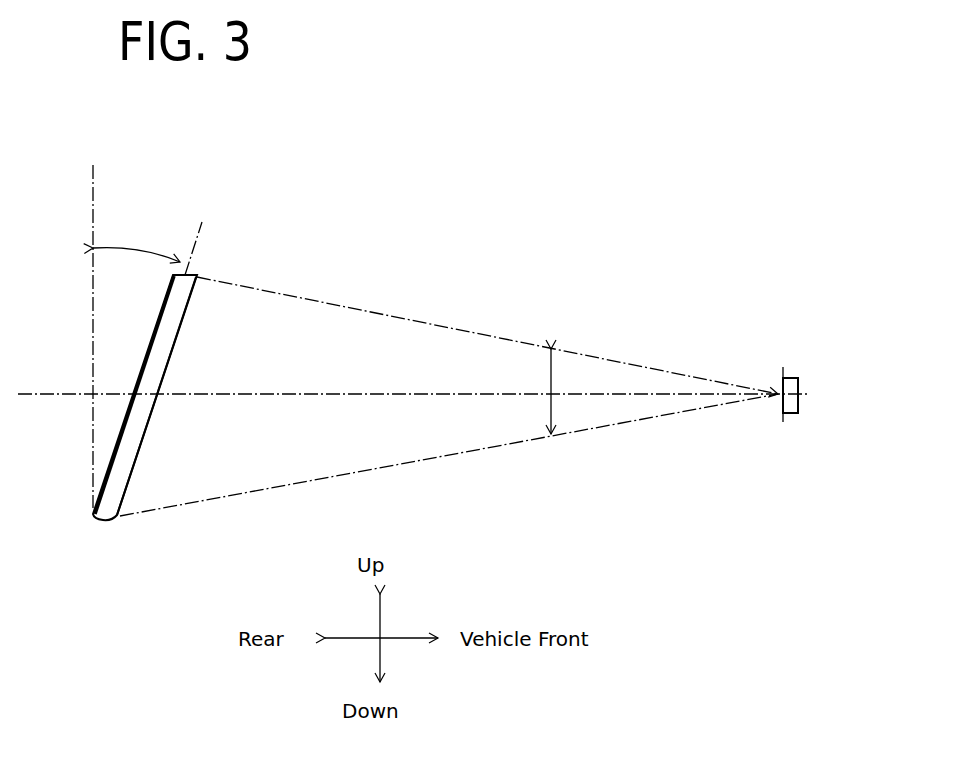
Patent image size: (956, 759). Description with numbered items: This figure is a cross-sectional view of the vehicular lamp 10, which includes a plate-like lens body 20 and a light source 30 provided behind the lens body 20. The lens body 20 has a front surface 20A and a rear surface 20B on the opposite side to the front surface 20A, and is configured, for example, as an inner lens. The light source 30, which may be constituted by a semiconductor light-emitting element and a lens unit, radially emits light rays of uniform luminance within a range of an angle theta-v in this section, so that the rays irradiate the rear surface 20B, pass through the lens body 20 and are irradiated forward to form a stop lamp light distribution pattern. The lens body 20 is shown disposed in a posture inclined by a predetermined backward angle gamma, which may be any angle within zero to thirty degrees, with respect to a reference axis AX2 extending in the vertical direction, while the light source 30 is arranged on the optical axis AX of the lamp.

The vehicular lamp 10 is at (403, 202).
The lens body 20 is at (190, 275).
The front surface 20A is at (136, 379).
The rear surface 20B is at (157, 410).
The light source 30 is at (788, 377).
The optical axis AX is at (287, 392).
The reference axis AX2 is at (95, 188).